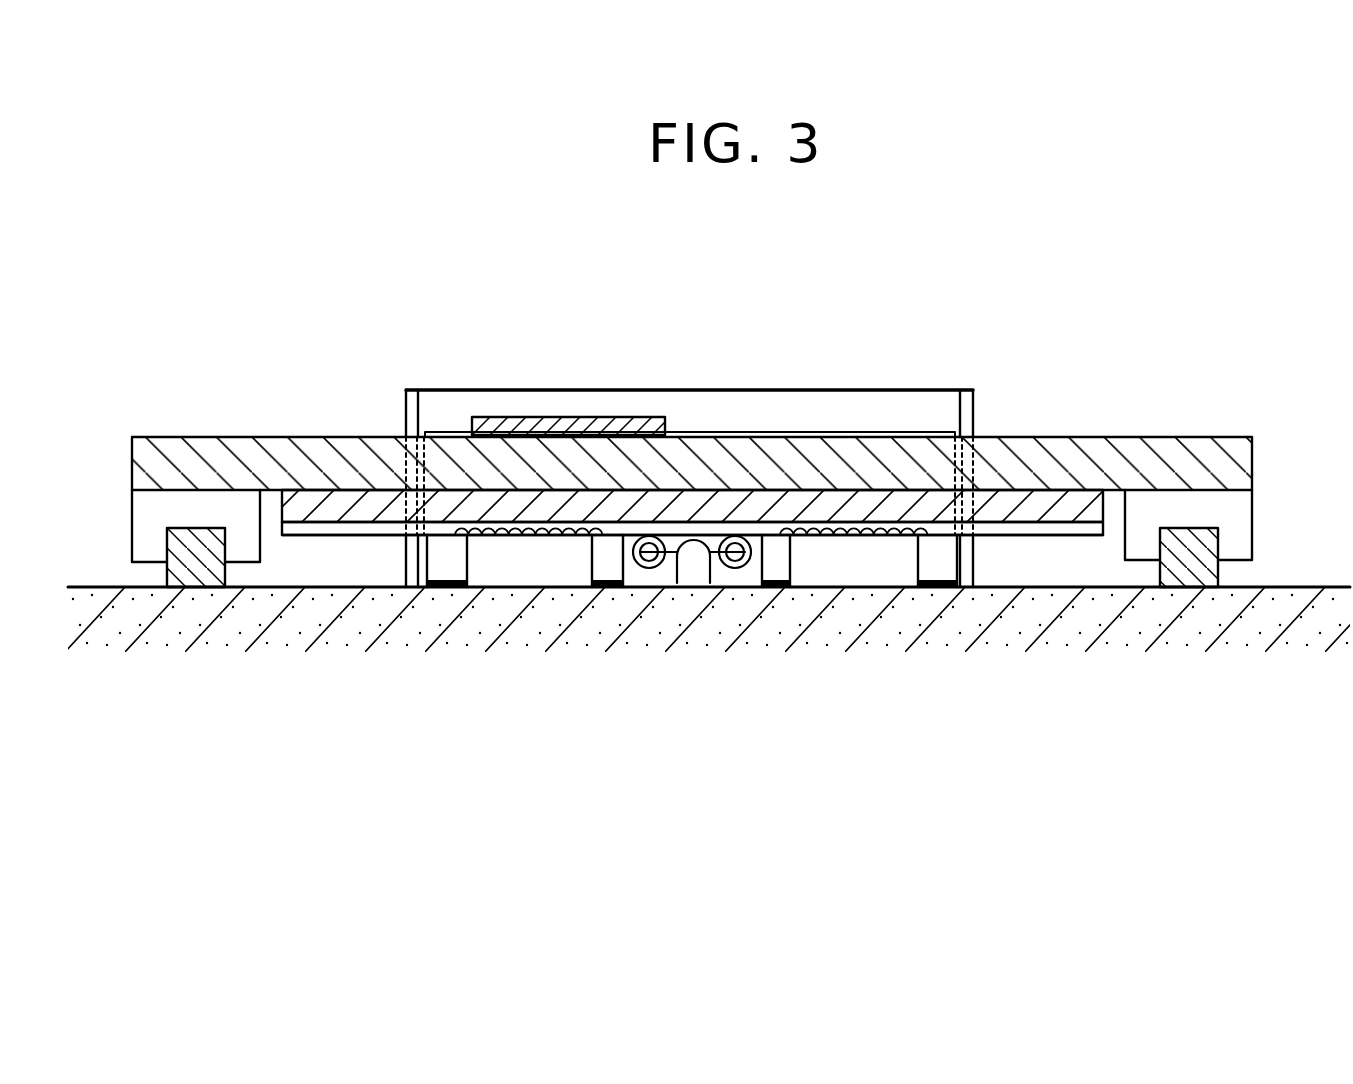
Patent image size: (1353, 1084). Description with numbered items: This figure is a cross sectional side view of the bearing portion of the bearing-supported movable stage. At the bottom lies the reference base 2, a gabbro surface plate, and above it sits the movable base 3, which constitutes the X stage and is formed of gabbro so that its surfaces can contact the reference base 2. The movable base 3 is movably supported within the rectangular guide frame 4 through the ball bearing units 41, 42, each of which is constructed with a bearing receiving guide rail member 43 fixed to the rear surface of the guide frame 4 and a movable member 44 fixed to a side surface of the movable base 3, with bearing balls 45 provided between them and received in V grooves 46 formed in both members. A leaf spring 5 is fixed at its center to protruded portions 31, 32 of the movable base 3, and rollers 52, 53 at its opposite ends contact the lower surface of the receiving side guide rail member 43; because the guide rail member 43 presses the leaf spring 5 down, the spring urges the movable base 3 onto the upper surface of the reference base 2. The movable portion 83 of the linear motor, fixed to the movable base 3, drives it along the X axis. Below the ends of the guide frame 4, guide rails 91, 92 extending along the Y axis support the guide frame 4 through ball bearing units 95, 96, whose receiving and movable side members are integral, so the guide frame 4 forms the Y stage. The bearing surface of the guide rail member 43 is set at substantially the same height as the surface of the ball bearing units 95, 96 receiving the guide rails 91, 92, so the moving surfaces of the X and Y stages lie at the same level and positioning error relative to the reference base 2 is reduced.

The reference base 2 is at (329, 597).
The movable base 3 is at (866, 390).
The guide frame 4 is at (1207, 438).
The leaf spring 5 is at (668, 537).
The movable portion 83 is at (578, 414).
The bearing receiving guide rail member 43 is at (1050, 498).
The movable member 44 is at (503, 575).
The bearing balls 45 is at (487, 536).
The V grooves 46 is at (1068, 527).
The protruded portion 31 is at (670, 653).
The protruded portion 32 is at (690, 571).
The ball bearing unit 41 is at (862, 681).
The ball bearing unit 42 is at (876, 578).
The roller 52 is at (644, 568).
The roller 53 is at (737, 568).
The guide rail 91 is at (1189, 568).
The guide rail 92 is at (192, 570).
The ball bearing unit 95 is at (1240, 510).
The ball bearing unit 96 is at (132, 530).